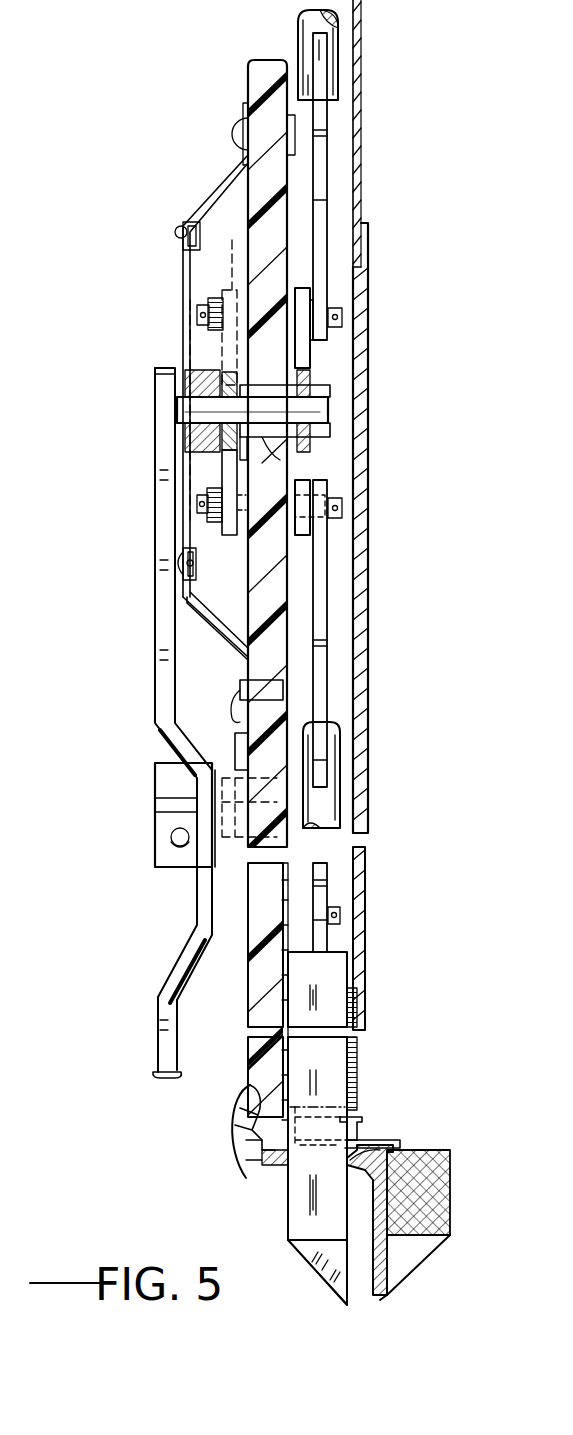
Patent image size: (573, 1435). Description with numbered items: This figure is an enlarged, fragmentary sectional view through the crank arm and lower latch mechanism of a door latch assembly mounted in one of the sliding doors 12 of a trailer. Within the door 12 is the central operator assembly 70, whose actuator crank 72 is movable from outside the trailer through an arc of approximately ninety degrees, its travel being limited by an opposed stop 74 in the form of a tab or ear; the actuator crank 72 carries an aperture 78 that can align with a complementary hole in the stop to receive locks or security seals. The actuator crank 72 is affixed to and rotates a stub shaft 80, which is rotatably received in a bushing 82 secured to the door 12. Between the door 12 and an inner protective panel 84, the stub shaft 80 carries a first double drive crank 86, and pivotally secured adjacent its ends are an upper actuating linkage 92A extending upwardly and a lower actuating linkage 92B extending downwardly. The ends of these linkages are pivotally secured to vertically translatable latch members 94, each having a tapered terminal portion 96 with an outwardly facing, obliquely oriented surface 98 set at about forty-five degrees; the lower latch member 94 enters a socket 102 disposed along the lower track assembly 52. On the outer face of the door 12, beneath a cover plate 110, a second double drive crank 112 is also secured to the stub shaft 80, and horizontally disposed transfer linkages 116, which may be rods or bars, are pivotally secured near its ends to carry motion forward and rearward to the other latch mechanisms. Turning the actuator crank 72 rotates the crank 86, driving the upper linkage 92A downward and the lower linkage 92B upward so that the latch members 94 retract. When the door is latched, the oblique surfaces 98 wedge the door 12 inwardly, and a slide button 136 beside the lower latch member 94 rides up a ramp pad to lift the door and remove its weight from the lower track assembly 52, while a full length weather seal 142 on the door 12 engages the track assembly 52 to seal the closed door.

The sliding door 12 is at (246, 78).
The upper actuating linkage 92A is at (328, 187).
The cover plate 110 is at (183, 314).
The transfer linkage 116 is at (180, 268).
The second double drive crank 112 is at (215, 560).
The first double drive crank 86 is at (311, 362).
The stub shaft 80 is at (330, 406).
The bushing 82 is at (266, 462).
The inner protective panel 84 is at (362, 638).
The lower actuating linkage 92B is at (341, 795).
The actuator crank 72 is at (153, 668).
The aperture 78 is at (171, 840).
The stop 74 is at (229, 850).
The latch member 94 is at (328, 1070).
The tapered terminal portion 96 is at (320, 1280).
The obliquely oriented surface 98 is at (318, 1270).
The slide button 136 is at (357, 1140).
The socket 102 is at (380, 1147).
The weather seal 142 is at (248, 1138).
The central operator assembly 70 is at (118, 511).
The lower track assembly 52 is at (205, 1170).